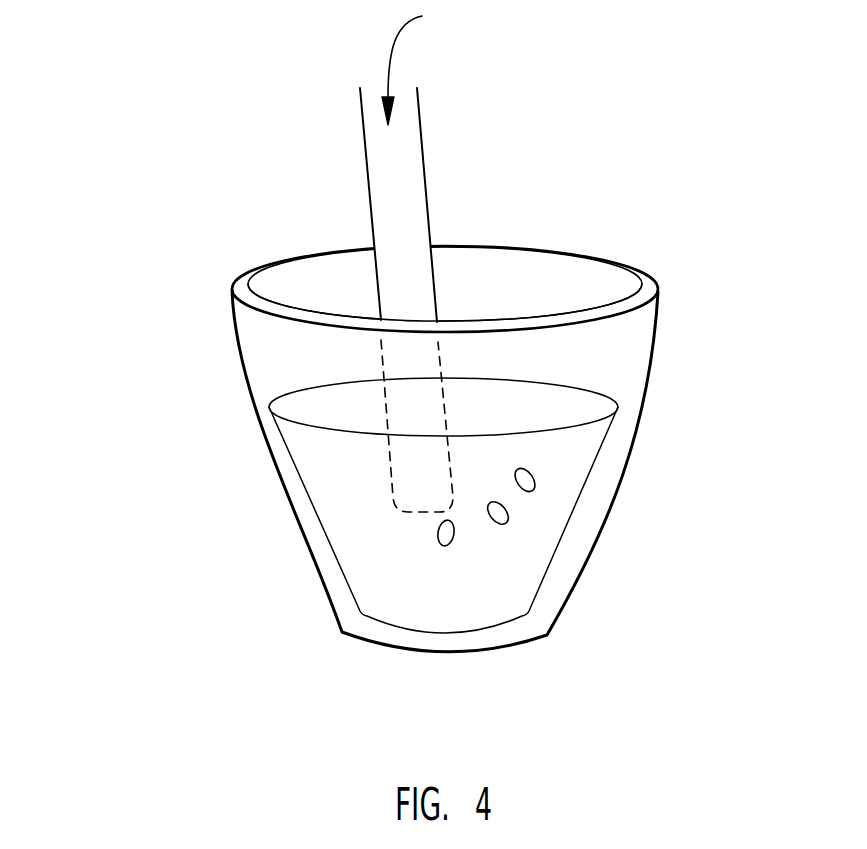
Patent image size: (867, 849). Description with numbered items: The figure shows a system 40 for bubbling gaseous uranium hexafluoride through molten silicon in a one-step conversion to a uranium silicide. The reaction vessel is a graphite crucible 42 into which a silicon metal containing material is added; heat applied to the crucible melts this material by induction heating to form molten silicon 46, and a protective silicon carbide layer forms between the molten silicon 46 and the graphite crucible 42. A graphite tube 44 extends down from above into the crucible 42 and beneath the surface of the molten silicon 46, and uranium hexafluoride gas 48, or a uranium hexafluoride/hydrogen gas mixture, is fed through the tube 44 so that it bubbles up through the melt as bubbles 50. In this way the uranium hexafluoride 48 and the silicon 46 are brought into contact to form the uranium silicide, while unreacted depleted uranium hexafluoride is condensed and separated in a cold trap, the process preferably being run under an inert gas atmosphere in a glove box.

The sensing apparatus / cup assembly 40 is at (411, 326).
The graphite crucible 42 is at (637, 343).
The graphite tube 44 is at (403, 180).
The molten silicon 46 is at (543, 512).
The uranium hexafluoride gas 48 is at (417, 63).
The bubbles 50 is at (438, 536).